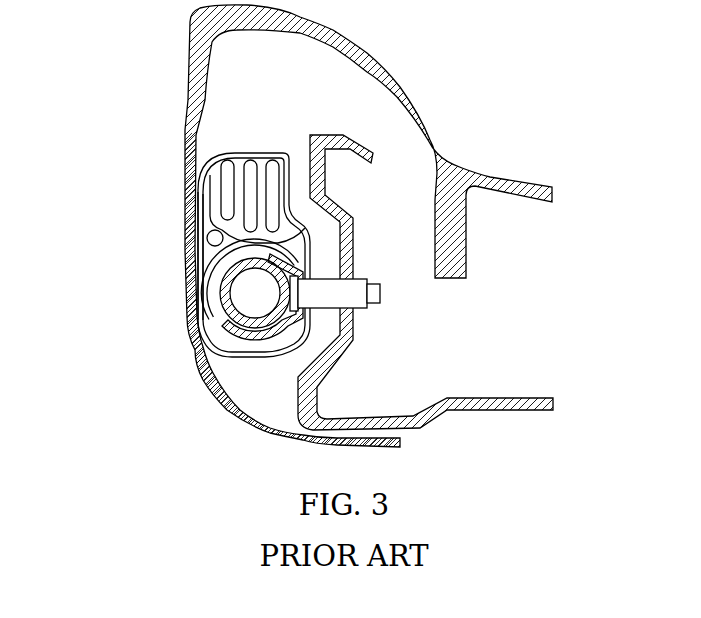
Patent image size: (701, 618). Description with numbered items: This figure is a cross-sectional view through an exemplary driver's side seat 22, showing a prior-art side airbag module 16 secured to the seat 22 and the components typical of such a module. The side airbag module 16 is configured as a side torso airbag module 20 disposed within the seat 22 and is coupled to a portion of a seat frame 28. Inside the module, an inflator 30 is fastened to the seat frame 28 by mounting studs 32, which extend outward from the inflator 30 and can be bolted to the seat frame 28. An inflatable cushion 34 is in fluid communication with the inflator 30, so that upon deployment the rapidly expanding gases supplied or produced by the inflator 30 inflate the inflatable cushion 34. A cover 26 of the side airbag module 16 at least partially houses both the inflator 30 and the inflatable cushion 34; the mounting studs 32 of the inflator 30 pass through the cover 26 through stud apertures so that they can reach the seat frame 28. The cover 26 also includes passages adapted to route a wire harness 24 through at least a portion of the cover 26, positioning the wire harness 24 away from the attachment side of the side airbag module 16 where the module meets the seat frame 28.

The seat 22 is at (410, 105).
The side airbag module 16 is at (220, 298).
The side torso airbag module 20 is at (228, 362).
The seat frame 28 is at (345, 349).
The cover 26 is at (211, 210).
The inflatable cushion 34 is at (213, 192).
The wire harness 24 is at (206, 234).
The inflator 30 is at (216, 294).
The mounting studs 32 is at (380, 293).